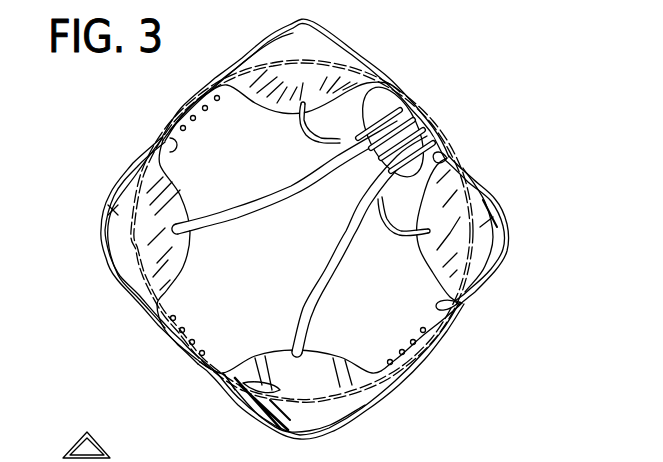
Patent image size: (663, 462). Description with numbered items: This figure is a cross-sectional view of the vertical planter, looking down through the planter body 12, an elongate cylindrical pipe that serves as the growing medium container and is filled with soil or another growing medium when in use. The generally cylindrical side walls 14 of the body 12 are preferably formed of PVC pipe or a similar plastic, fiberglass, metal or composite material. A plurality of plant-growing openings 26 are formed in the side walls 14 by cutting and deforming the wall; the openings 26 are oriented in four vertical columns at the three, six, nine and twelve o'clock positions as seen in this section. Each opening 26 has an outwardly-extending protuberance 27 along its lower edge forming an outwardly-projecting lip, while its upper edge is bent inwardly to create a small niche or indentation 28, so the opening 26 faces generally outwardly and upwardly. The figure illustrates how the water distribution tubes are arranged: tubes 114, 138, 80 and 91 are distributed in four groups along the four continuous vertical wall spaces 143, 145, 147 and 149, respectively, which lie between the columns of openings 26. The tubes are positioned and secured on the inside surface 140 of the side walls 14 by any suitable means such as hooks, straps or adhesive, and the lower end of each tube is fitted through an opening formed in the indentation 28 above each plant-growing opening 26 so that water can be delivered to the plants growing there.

The body 12 is at (163, 113).
The side walls 14 is at (430, 350).
The openings 26 is at (293, 33).
The protuberance 27 is at (103, 230).
The indentation 28 is at (187, 244).
The water distribution tube 80 is at (373, 103).
The water distribution tube 91 is at (227, 97).
The water distribution tube 114 is at (213, 363).
The water distribution tube 138 is at (420, 313).
The inside surface 140 is at (243, 385).
The continuous vertical wall space 143 is at (200, 362).
The continuous vertical wall space 145 is at (458, 303).
The continuous vertical wall space 147 is at (447, 158).
The continuous vertical wall space 149 is at (158, 152).